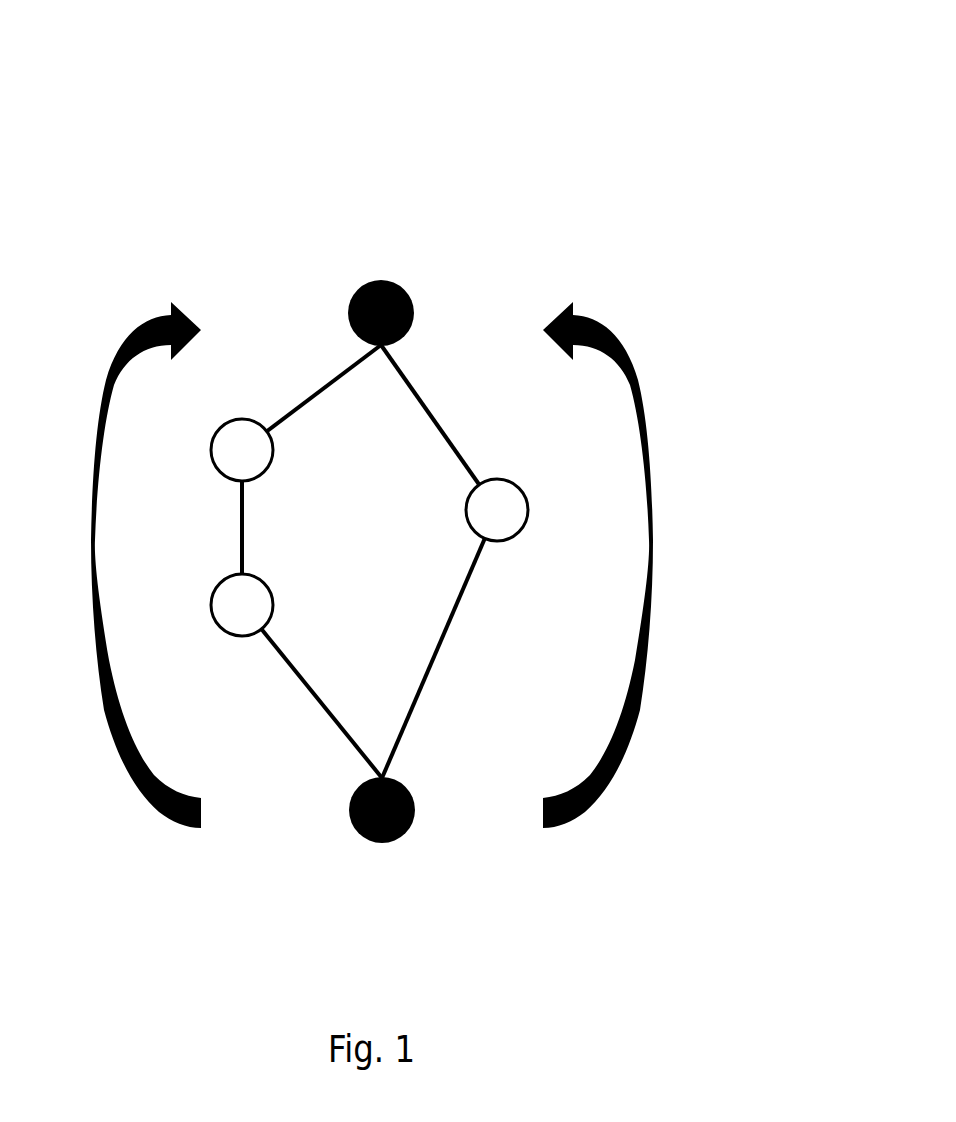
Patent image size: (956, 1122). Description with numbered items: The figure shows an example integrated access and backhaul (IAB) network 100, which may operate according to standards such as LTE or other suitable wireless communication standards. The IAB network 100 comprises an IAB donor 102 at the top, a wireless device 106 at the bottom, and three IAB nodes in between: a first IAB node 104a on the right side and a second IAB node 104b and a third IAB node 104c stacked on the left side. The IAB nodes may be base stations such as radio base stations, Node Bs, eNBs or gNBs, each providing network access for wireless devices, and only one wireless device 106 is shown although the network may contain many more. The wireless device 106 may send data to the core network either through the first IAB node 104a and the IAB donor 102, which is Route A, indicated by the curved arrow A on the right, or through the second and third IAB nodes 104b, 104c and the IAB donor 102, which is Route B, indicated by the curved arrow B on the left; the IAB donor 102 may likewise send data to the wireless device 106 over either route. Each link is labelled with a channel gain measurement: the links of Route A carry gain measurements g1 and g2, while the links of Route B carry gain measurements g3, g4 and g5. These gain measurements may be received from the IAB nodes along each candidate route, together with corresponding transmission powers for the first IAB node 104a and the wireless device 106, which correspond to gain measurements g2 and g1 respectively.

The integrated access and backhaul (IAB) network 100 is at (548, 71).
The IAB donor 102 is at (381, 280).
The first IAB node 104a is at (523, 490).
The second IAB node 104b is at (210, 605).
The third IAB node 104c is at (209, 444).
The wireless device 106 is at (382, 844).
The gain measurement g1 is at (427, 395).
The gain measurement g2 is at (435, 670).
The gain measurement g3 is at (313, 395).
The gain measurement g4 is at (241, 528).
The gain measurement g5 is at (297, 698).
The Route A is at (615, 565).
The Route B is at (129, 565).